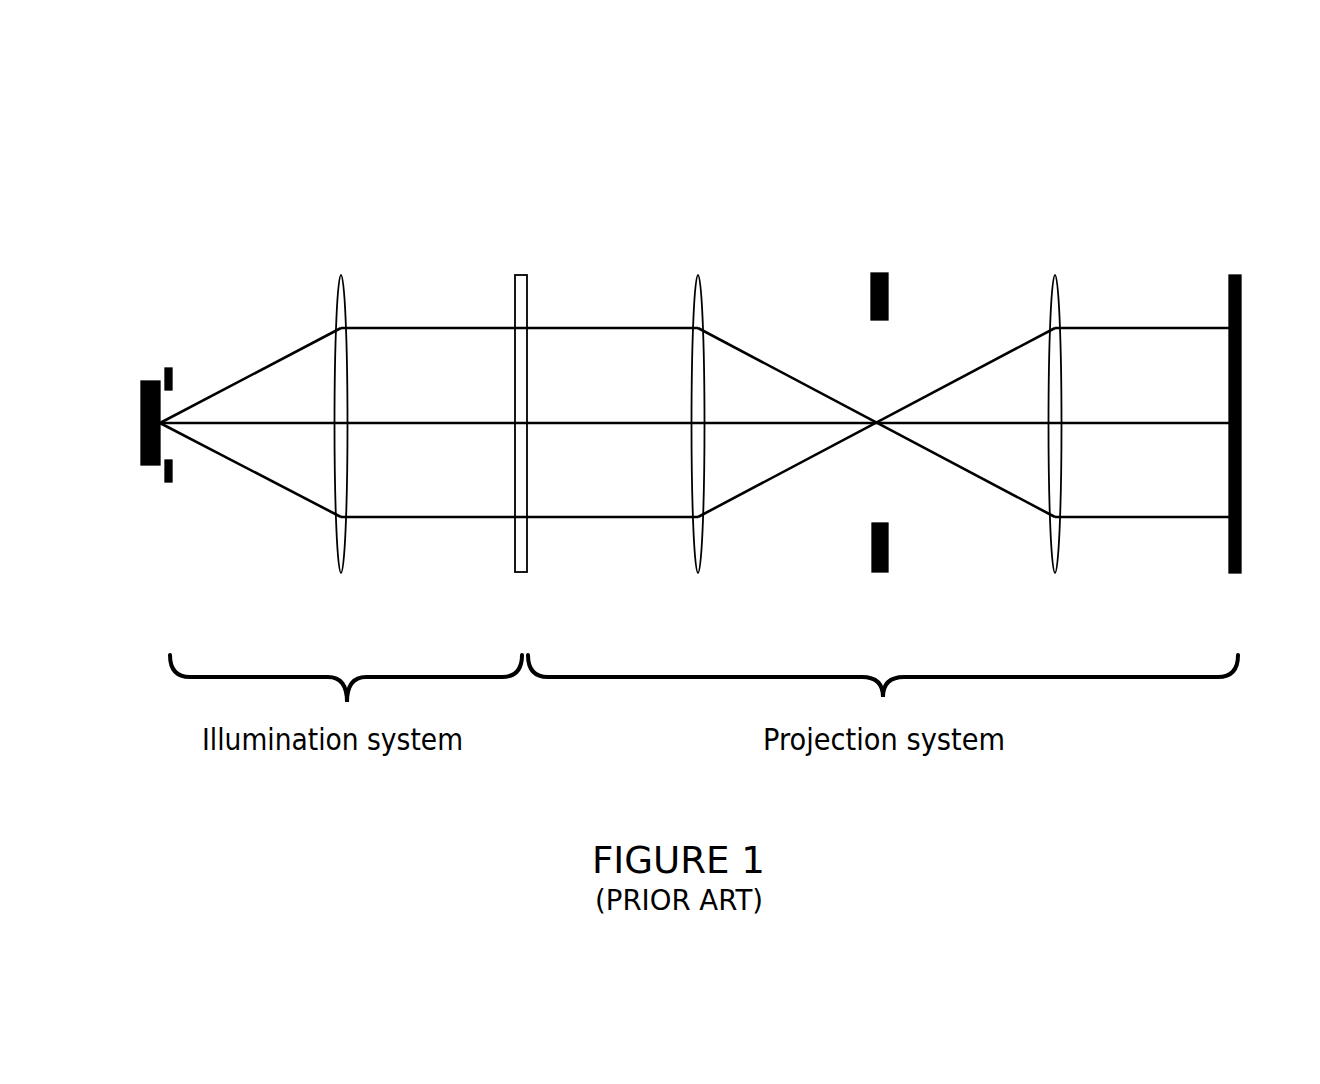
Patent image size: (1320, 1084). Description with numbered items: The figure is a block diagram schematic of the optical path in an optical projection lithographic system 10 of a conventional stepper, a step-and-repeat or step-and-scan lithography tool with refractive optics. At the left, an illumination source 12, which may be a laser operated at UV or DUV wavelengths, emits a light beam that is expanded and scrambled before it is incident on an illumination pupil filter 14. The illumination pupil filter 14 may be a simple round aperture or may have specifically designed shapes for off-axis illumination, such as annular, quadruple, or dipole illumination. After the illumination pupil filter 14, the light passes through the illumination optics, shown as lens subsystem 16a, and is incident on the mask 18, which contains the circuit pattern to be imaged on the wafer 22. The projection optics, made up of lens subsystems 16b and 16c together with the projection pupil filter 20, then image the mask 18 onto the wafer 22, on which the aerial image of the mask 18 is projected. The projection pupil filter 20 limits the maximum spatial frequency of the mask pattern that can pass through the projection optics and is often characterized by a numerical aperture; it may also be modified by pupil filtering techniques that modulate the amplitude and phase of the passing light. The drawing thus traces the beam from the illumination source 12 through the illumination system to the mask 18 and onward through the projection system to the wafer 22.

The optical projection lithographic system 10 is at (1210, 78).
The illumination source 12 is at (141, 455).
The illumination pupil filter 14 is at (170, 342).
The lens subsystem 16a is at (341, 236).
The lens subsystem 16b is at (700, 236).
The lens subsystem 16c is at (1056, 246).
The mask 18 is at (521, 236).
The projection pupil filter 20 is at (932, 235).
The wafer 22 is at (1235, 273).